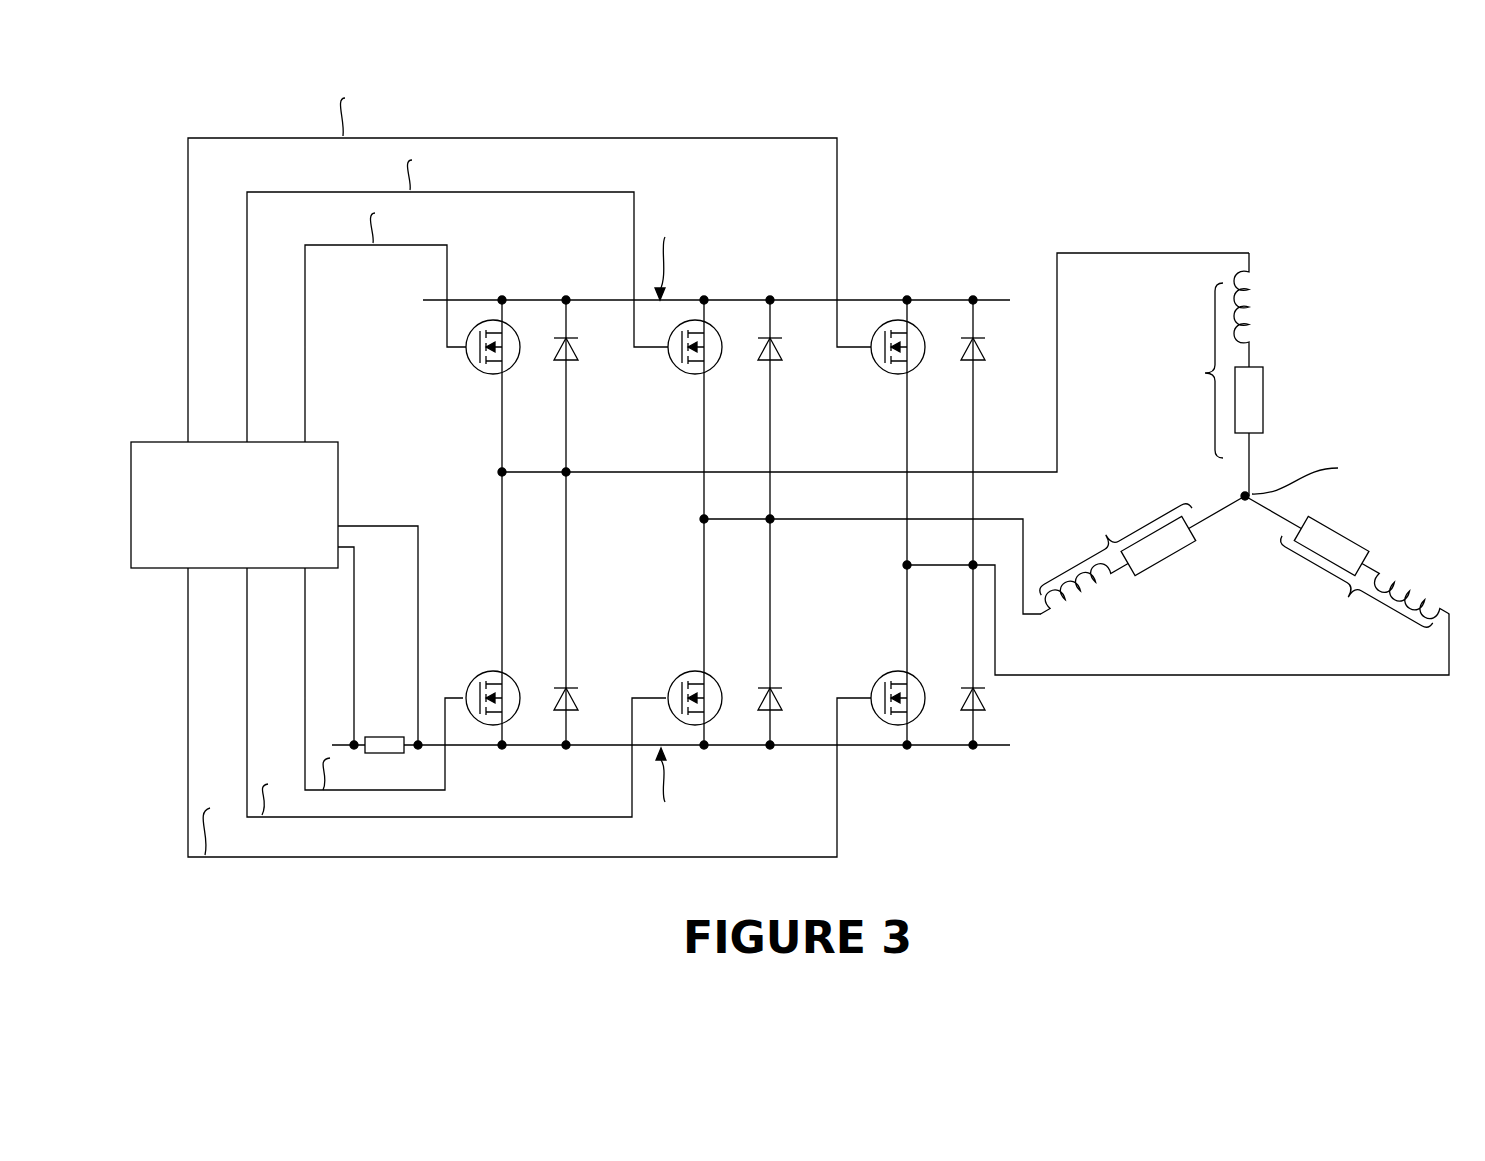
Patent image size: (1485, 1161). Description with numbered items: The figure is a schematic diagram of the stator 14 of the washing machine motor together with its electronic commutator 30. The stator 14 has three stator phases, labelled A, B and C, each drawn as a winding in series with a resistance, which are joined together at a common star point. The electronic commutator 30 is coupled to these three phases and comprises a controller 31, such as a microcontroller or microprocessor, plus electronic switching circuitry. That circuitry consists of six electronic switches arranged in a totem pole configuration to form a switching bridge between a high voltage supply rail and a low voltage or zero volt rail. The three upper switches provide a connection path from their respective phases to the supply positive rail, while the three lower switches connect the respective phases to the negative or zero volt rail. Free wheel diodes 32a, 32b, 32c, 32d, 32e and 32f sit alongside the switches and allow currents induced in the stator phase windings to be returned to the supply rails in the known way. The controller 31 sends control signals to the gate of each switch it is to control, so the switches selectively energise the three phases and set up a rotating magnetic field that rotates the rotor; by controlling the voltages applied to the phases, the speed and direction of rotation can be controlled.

The electronic commutator 30 is at (818, 469).
The controller 31 is at (168, 455).
The stator 14 is at (1310, 407).
The free wheel diode 32a is at (547, 362).
The free wheel diode 32b is at (548, 682).
The free wheel diode 32c is at (755, 362).
The free wheel diode 32d is at (753, 686).
The free wheel diode 32e is at (957, 360).
The free wheel diode 32f is at (953, 686).